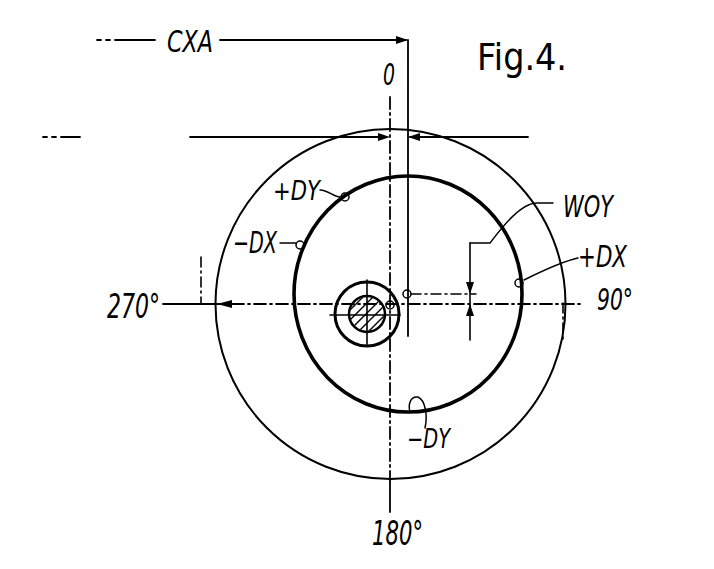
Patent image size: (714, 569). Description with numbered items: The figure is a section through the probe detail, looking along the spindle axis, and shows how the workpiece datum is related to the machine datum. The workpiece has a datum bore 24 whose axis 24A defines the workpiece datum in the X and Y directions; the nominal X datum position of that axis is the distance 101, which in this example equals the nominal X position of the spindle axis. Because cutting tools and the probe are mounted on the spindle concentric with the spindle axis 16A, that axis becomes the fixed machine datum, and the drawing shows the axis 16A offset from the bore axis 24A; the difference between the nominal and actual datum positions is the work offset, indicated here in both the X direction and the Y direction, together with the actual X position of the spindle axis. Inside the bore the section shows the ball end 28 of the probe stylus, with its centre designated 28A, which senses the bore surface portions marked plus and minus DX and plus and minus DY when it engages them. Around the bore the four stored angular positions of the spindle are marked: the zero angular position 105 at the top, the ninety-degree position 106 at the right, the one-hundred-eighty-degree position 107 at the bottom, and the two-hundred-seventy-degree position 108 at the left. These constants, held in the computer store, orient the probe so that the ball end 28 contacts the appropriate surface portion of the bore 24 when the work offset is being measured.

The nominal X datum position 101 is at (312, 142).
The zero angular position of the spindle 105 is at (388, 101).
The 90° angular position of the spindle 106 is at (577, 304).
The 180° angular position of the spindle 107 is at (387, 497).
The 270° angular position of the spindle 108 is at (203, 257).
The datum bore 24 is at (495, 375).
The axis of the datum bore 24A is at (409, 290).
The spindle axis 16A is at (407, 315).
The ball end 28 is at (344, 336).
The grinding tool axis 28A is at (367, 282).